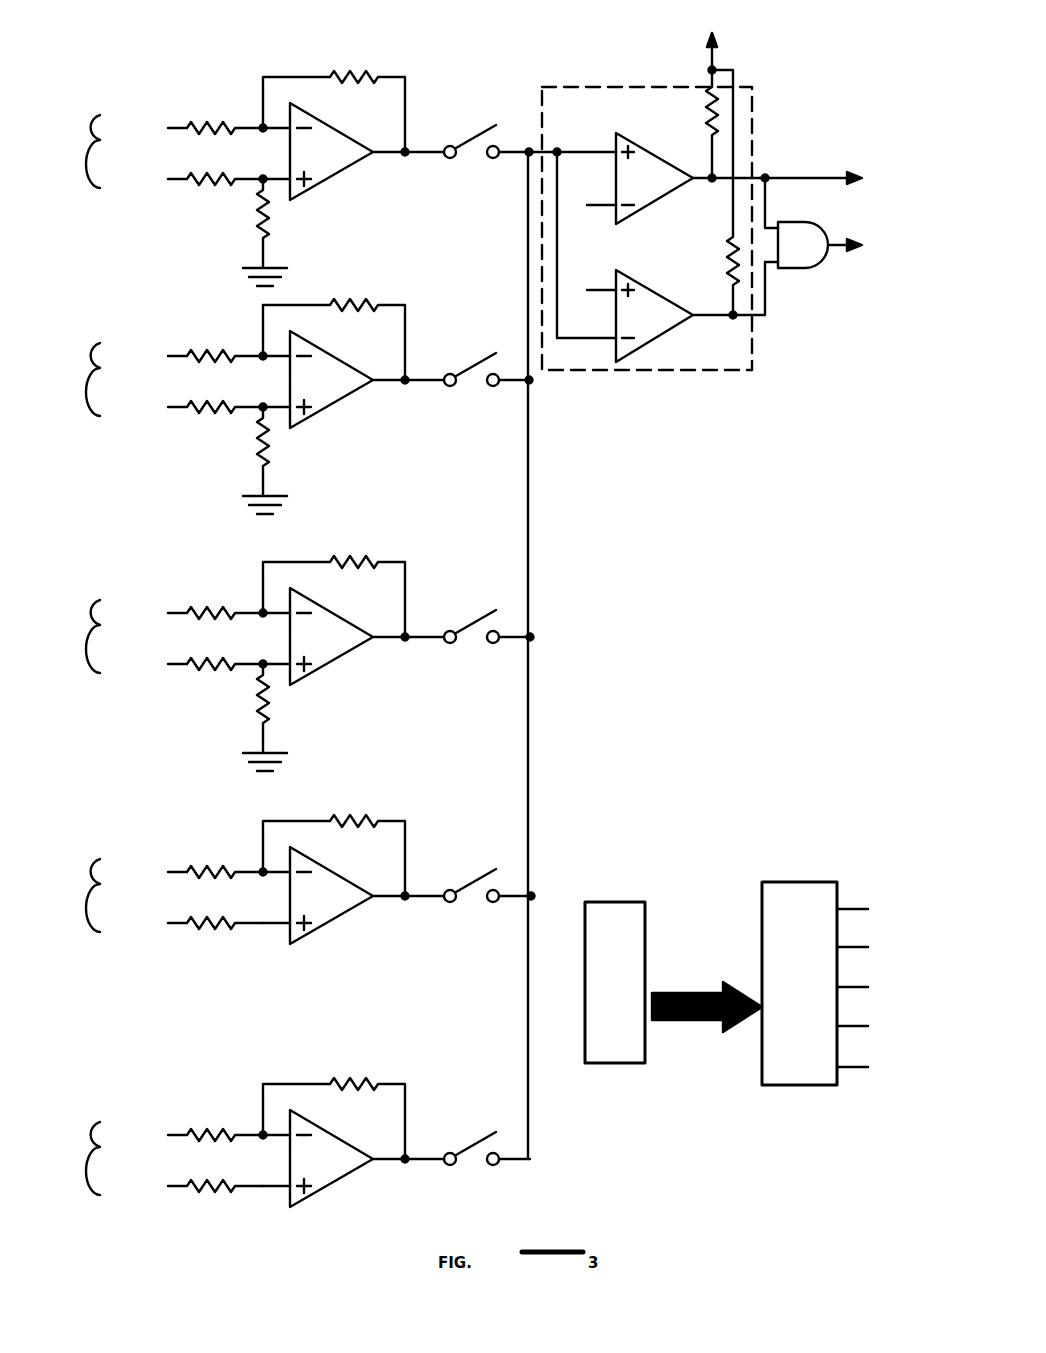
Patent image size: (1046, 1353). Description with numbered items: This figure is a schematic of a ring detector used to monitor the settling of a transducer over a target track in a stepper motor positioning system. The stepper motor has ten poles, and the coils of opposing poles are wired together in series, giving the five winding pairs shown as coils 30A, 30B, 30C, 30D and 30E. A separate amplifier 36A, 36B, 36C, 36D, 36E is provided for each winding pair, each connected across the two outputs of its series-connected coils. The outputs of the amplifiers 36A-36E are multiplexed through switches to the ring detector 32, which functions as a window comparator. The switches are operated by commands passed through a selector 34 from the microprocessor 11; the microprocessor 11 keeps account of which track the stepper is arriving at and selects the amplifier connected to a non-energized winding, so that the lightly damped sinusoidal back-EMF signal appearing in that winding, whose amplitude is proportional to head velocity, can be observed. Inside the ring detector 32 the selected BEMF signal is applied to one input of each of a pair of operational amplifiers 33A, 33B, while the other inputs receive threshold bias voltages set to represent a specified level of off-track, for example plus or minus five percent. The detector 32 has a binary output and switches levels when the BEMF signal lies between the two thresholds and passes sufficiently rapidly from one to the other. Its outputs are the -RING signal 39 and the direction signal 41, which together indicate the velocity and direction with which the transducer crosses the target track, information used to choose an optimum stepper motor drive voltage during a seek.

The coil 30A is at (95, 140).
The coil 30B is at (95, 368).
The coil 30C is at (95, 625).
The coil 30D is at (95, 884).
The coil 30E is at (95, 1147).
The amplifier 36A is at (318, 185).
The amplifier 36B is at (318, 413).
The amplifier 36C is at (318, 670).
The amplifier 36D is at (318, 929).
The amplifier 36E is at (318, 1192).
The ring detector 32 is at (653, 372).
The operational amplifier 33A is at (648, 150).
The operational amplifier 33B is at (663, 338).
The direction signal 41 is at (795, 181).
The -RING signal 39 is at (795, 246).
The microprocessor 11 is at (620, 1057).
The selector 34 is at (795, 892).